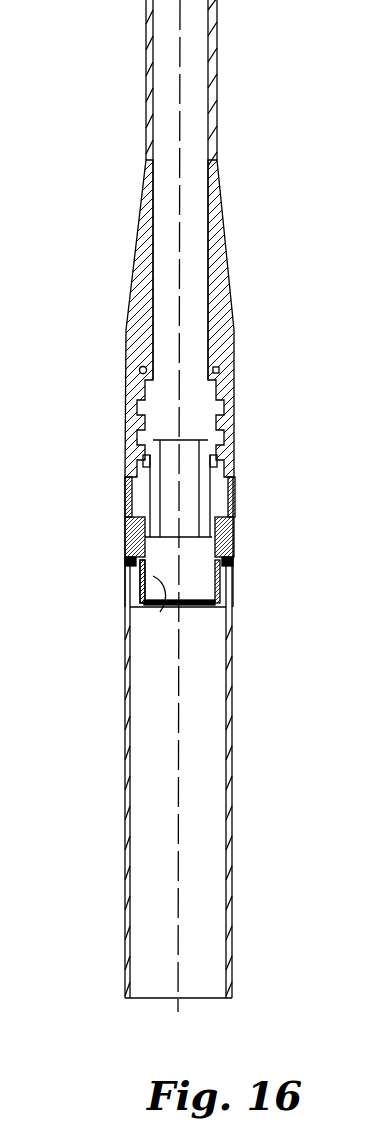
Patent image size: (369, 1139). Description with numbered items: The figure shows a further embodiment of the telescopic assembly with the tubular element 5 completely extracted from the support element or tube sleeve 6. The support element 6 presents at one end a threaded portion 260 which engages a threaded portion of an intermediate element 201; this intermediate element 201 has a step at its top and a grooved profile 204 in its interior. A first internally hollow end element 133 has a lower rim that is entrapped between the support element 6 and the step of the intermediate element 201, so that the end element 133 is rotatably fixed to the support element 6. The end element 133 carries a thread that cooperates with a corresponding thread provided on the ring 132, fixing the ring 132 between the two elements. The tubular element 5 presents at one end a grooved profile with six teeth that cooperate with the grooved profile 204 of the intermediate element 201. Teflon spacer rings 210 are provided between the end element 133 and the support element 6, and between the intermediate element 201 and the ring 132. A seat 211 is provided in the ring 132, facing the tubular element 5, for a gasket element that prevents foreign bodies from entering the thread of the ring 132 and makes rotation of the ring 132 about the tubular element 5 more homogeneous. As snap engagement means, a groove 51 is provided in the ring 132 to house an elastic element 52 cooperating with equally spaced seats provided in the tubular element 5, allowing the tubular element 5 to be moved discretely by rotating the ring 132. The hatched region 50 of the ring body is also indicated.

The tubular element 5 is at (216, 89).
The seat 211 is at (140, 292).
The threaded connector body 50 is at (215, 352).
The groove 51 is at (139, 371).
The elastic element 52 is at (141, 368).
The ring 132 is at (234, 362).
The teflon spacer rings 210 is at (232, 518).
The intermediate element 201 is at (126, 528).
The end element 133 is at (234, 540).
The threaded portion 260 is at (140, 578).
The grooved profile 204 is at (160, 612).
The support element 6 is at (230, 705).